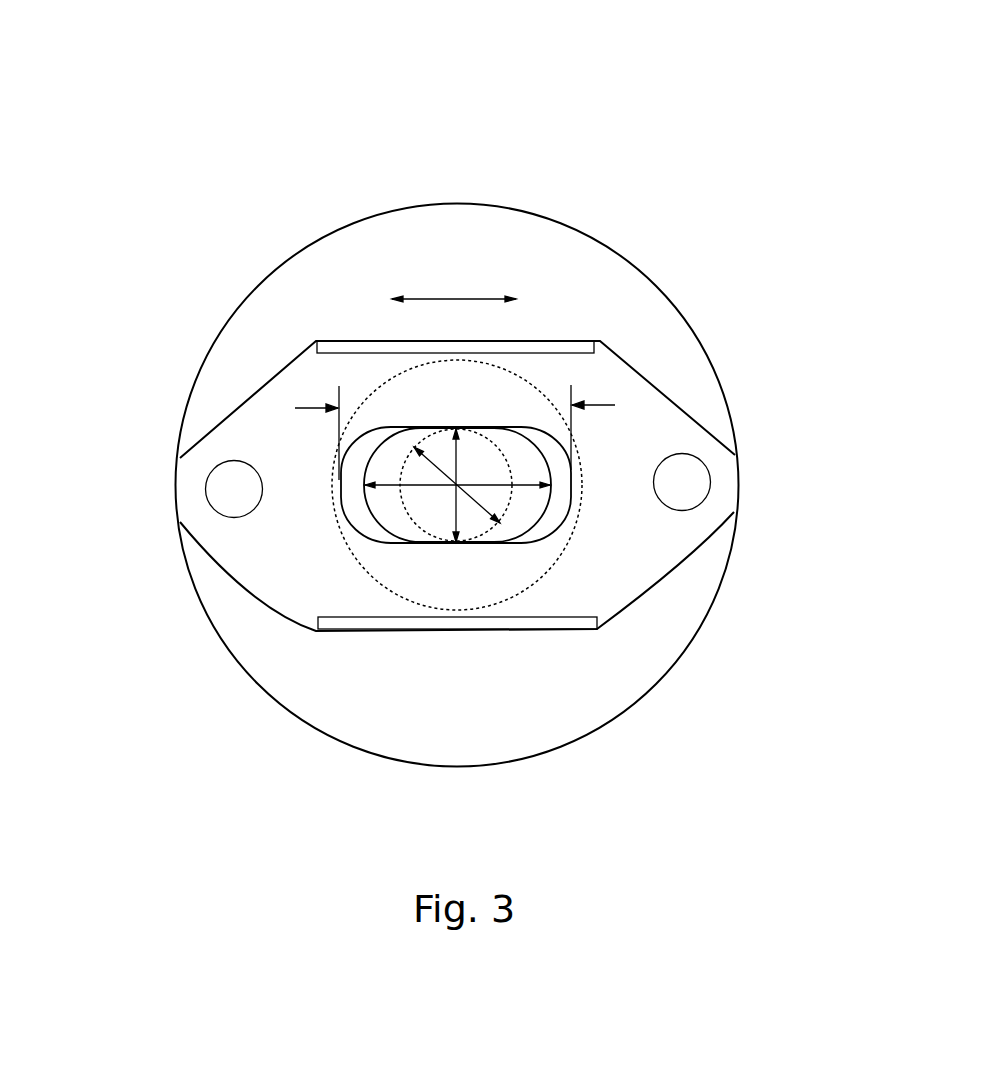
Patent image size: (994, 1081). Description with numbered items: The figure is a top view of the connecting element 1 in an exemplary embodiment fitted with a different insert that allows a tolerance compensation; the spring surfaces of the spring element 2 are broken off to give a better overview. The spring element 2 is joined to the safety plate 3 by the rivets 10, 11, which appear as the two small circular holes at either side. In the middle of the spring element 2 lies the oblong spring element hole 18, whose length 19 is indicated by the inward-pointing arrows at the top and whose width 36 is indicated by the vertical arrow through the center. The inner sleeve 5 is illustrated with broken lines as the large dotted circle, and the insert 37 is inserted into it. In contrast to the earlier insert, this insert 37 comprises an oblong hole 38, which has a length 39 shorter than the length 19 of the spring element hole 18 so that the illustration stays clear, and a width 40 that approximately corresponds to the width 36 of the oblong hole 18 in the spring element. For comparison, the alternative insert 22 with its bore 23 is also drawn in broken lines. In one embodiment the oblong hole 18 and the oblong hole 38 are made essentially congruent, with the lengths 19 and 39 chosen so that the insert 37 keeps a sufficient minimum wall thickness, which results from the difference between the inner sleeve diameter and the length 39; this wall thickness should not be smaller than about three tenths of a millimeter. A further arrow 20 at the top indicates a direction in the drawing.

The connecting element 1 is at (553, 107).
The spring element 2 is at (566, 307).
The safety plate 3 is at (673, 340).
The inner sleeve 5 is at (521, 487).
The rivet 10 is at (230, 483).
The rivet 11 is at (693, 478).
The oblong spring element hole 18 is at (348, 478).
The length of the oblong spring element hole 19 is at (305, 407).
The displacement direction 20 is at (456, 296).
The insert 22 is at (410, 423).
The bore 23 is at (388, 447).
The width of the oblong spring element hole 36 is at (480, 510).
The insert 37 is at (557, 470).
The oblong hole 38 is at (550, 500).
The length of the oblong hole 39 is at (543, 562).
The width of the oblong hole 40 is at (478, 511).